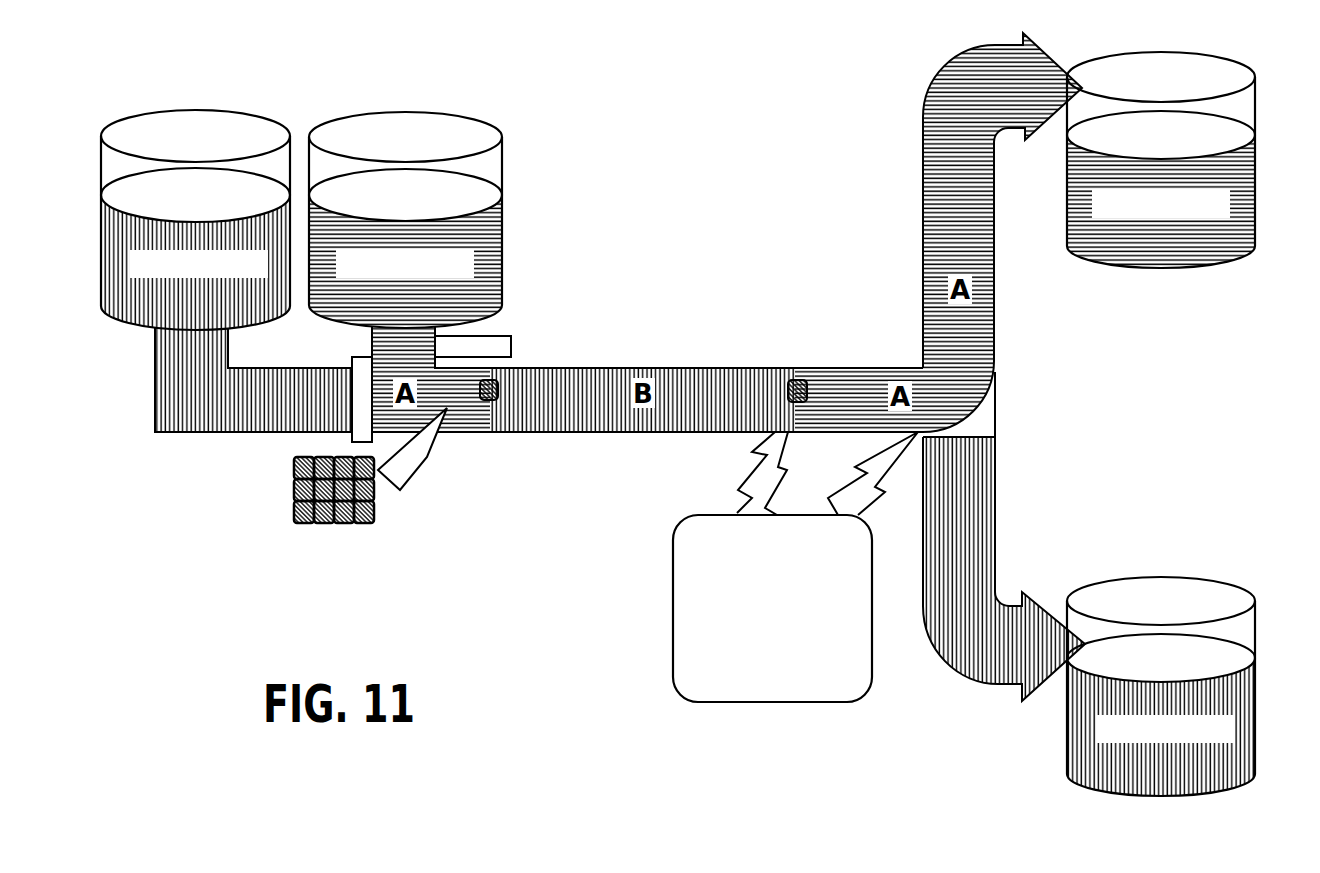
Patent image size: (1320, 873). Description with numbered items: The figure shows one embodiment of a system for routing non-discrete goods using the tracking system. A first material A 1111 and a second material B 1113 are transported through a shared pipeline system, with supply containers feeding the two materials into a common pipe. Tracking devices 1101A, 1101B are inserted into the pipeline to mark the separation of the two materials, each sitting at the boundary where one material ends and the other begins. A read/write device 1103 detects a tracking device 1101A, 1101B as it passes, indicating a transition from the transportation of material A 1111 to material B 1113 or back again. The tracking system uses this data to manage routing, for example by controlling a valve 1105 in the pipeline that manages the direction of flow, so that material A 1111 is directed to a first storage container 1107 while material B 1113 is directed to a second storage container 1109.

The tracking device 1101A is at (482, 400).
The second read device 1101B is at (803, 378).
The read/write device 1103 is at (712, 688).
The valve 1105 is at (997, 412).
The first storage container 1107 is at (1178, 238).
The second storage container 1109 is at (1157, 677).
The material A 1111 is at (195, 212).
The material B 1113 is at (405, 210).